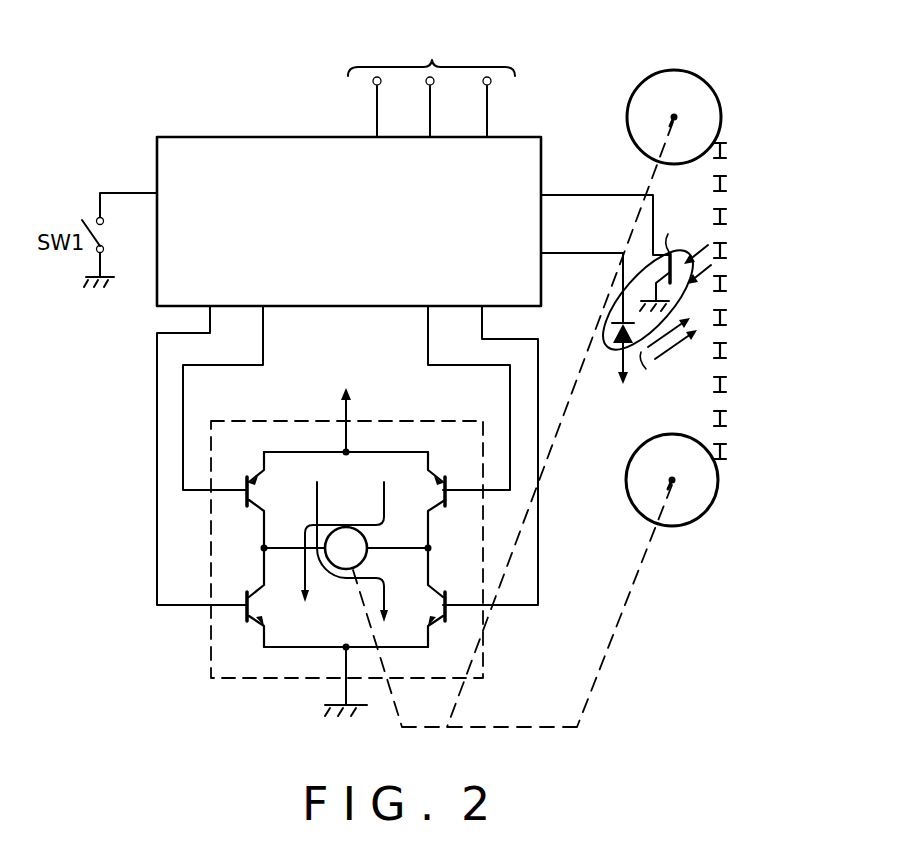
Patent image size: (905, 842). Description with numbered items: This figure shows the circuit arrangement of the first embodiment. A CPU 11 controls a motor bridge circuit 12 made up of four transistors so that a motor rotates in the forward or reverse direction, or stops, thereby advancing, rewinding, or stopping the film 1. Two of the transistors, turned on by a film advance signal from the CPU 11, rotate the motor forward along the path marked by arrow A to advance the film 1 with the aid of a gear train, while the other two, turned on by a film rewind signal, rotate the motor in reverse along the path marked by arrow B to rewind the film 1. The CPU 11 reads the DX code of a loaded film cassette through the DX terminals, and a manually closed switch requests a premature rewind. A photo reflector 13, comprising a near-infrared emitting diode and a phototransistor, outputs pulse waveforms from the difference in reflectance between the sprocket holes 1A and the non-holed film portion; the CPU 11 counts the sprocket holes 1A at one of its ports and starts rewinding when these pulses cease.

The film 1 is at (722, 181).
The sprocket holes 1A is at (724, 405).
The CPU 11 is at (213, 137).
The motor bridge circuit 12 is at (211, 656).
The photo reflector 13 is at (619, 293).